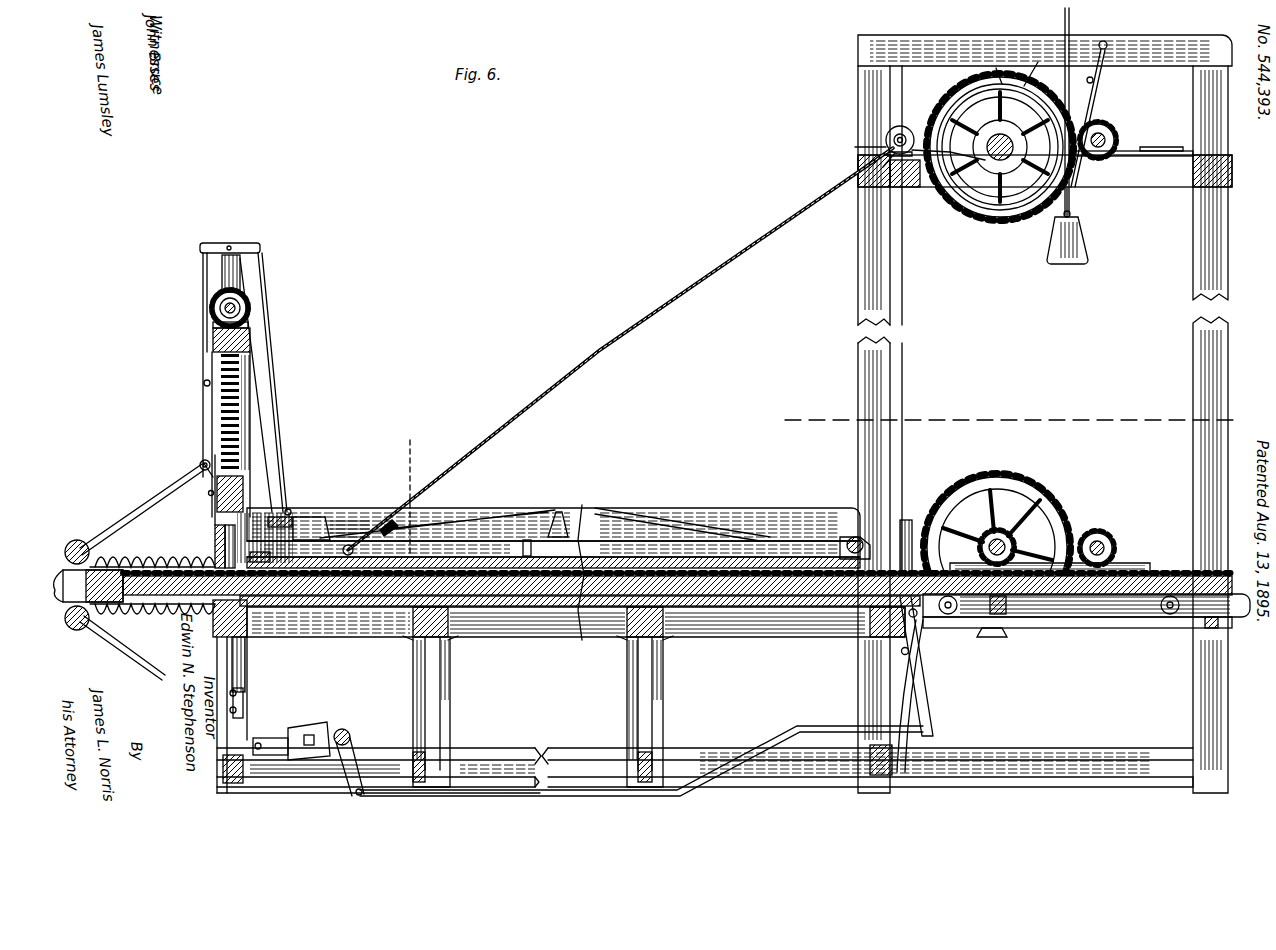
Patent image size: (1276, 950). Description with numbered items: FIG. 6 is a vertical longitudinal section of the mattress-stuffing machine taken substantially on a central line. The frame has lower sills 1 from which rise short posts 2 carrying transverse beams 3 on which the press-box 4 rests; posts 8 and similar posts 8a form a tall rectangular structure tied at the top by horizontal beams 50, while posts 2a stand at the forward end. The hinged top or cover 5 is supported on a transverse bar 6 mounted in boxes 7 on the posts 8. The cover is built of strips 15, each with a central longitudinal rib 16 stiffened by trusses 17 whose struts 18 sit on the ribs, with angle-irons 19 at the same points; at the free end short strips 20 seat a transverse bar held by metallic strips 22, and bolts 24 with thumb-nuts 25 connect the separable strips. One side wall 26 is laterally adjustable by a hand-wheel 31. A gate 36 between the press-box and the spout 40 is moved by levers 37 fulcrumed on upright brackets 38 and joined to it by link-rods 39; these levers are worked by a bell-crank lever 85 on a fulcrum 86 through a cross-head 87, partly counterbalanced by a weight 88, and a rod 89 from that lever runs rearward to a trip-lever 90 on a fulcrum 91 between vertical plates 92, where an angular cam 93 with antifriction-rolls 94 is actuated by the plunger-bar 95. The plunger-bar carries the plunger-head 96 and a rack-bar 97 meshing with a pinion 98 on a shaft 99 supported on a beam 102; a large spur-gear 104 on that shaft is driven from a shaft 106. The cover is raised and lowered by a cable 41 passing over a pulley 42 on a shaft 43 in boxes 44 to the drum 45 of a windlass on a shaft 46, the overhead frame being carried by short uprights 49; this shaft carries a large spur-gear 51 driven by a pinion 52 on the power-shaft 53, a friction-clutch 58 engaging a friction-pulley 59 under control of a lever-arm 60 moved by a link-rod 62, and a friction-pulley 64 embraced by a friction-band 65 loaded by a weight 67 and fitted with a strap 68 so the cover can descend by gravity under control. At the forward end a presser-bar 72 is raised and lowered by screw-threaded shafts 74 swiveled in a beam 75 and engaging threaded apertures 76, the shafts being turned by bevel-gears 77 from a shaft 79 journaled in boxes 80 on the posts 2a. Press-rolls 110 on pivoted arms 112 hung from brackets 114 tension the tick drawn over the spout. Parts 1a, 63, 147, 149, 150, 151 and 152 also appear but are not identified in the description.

The sills 1 is at (695, 748).
The upper frame beam 1a is at (708, 636).
The posts 2 is at (549, 712).
The posts 2a is at (258, 402).
The transverse horizontal beams 3 is at (450, 640).
The press-box 4 is at (765, 612).
The top or cover 5 is at (591, 623).
The transverse bar 6 is at (856, 530).
The boxes 7 is at (1014, 429).
The posts 8 is at (891, 408).
The posts 8a is at (1195, 429).
The strips 15 is at (700, 566).
The central longitudinal rib 16 is at (553, 547).
The trusses 17 is at (620, 512).
The struts 18 is at (560, 512).
The angle-irons 19 is at (543, 547).
The short strips 20 is at (320, 517).
The metallic strips 22 is at (272, 490).
The bolts 24 is at (290, 518).
The thumb-nuts 25 is at (290, 509).
The side wall 26 is at (770, 510).
The hand-wheel 31 is at (915, 537).
The gate 36 is at (214, 530).
The levers 37 is at (244, 694).
The upright brackets 38 is at (260, 770).
The link-rods 39 is at (238, 660).
The spout 40 is at (88, 586).
The cable 41 is at (664, 351).
The roll or pulley 42 is at (855, 137).
The shaft 43 is at (901, 125).
The boxes 44 is at (858, 188).
The drum 45 is at (990, 175).
The shaft 46 is at (1008, 165).
The short uprights 49 is at (1029, 87).
The horizontal beams 50 is at (1230, 170).
The large spur-gear 51 is at (997, 147).
The small pinion 52 is at (1108, 132).
The power-shaft 53 is at (1106, 142).
The friction-clutch 58 is at (1036, 62).
The friction-pulley 59 is at (992, 64).
The lever-arm 60 is at (1125, 156).
The link-rod 62 is at (1172, 153).
The bearing block 63 is at (905, 173).
The friction-pulley 64 is at (952, 200).
The friction band or strap 65 is at (1085, 105).
The weight 67 is at (1066, 235).
The strap 68 is at (1079, 111).
The presser-bar 72 is at (200, 467).
The screw-threaded shafts 74 is at (242, 420).
The horizontal transverse beam 75 is at (252, 348).
The threaded apertures 76 is at (210, 306).
The bevel-gears 77 is at (212, 326).
The shaft 79 is at (242, 314).
The boxes 80 is at (242, 280).
The bell-crank or elbow lever 85 is at (340, 723).
The fulcrum 86 is at (345, 728).
The cross-head 87 is at (265, 738).
The weight 88 is at (309, 732).
The rod 89 is at (641, 769).
The trip-lever 90 is at (927, 666).
The fulcrum 91 is at (910, 652).
The vertical plates 92 is at (895, 655).
The angular cam 93 is at (918, 616).
The antifriction-rolls 94 is at (1001, 613).
The plunger-bar 95 is at (677, 594).
The plunger-head 96 is at (118, 562).
The rack-bar 97 is at (150, 560).
The pinion 98 is at (1004, 538).
The shaft 99 is at (997, 525).
The horizontal beam 102 is at (1122, 566).
The large spur-gear 104 is at (1048, 520).
The shaft 106 is at (1110, 540).
The press-rolls 110 is at (75, 540).
The pivoted arms 112 is at (142, 581).
The brackets 114 is at (203, 460).
The pin block 147 is at (211, 494).
The pin 149 is at (204, 386).
The collar 150 is at (210, 334).
The cap 151 is at (230, 238).
The guide rod 152 is at (265, 290).